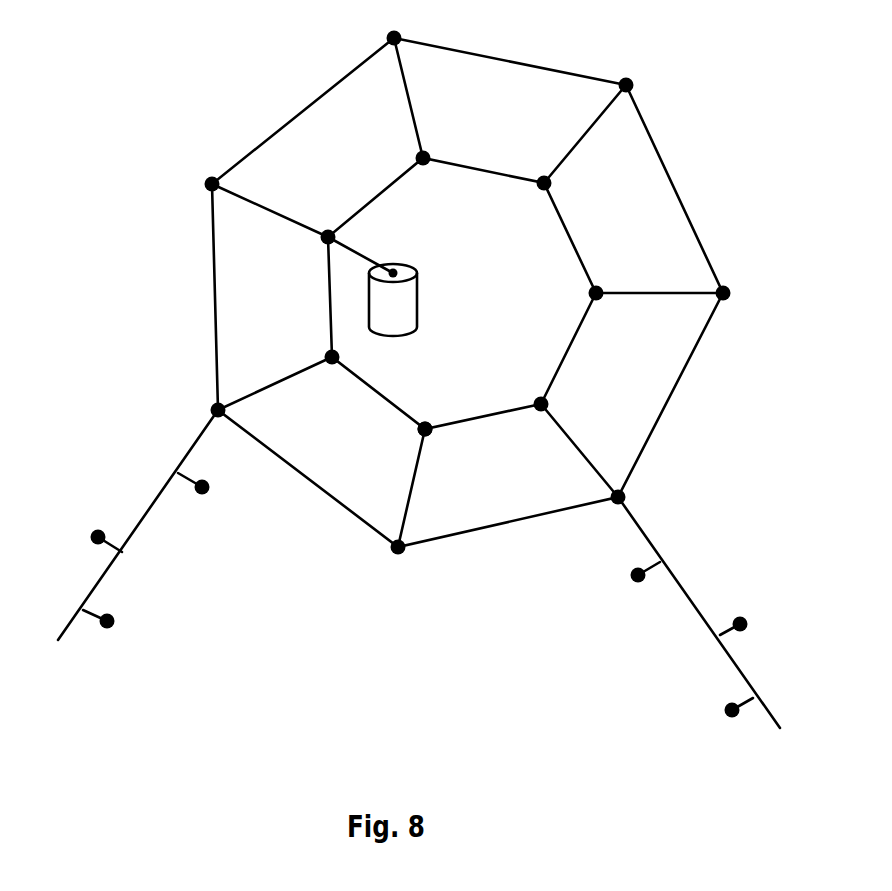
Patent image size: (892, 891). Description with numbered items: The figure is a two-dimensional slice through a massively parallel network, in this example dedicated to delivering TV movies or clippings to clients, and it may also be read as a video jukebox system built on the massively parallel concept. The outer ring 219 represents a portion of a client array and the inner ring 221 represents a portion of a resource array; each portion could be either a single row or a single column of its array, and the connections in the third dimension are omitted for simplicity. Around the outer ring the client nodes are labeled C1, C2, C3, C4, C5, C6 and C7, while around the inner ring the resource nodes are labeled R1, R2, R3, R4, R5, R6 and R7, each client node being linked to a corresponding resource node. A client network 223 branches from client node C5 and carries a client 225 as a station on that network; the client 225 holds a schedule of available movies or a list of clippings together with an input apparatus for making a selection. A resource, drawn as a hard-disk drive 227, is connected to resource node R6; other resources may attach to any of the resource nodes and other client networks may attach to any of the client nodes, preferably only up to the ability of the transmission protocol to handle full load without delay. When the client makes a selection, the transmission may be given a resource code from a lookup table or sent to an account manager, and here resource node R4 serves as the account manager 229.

The ring 219 is at (483, 48).
The ring 221 is at (573, 347).
The client network 223 is at (150, 507).
The client 225 is at (115, 622).
The hard-disk drive 227 is at (398, 267).
The account manager 229 is at (420, 429).
The client node C1 is at (641, 76).
The client node C2 is at (744, 297).
The client node C3 is at (607, 513).
The client node C4 is at (393, 563).
The client node C5 is at (200, 407).
The client node C6 is at (193, 185).
The client node C7 is at (389, 23).
The resource node R1 is at (534, 167).
The resource node R2 is at (612, 278).
The resource node R3 is at (526, 391).
The resource node R4 is at (430, 414).
The resource node R5 is at (311, 350).
The resource node R6 is at (311, 213).
The resource node R7 is at (402, 152).